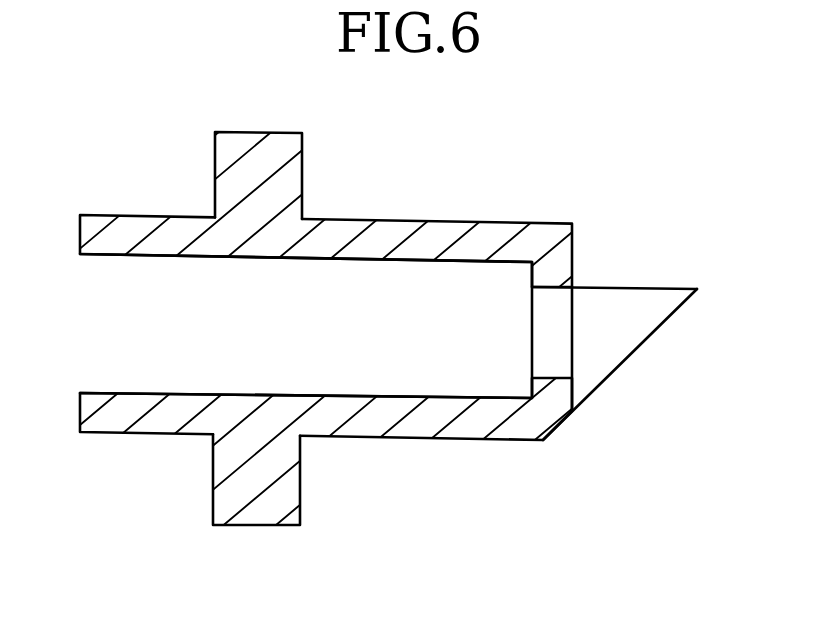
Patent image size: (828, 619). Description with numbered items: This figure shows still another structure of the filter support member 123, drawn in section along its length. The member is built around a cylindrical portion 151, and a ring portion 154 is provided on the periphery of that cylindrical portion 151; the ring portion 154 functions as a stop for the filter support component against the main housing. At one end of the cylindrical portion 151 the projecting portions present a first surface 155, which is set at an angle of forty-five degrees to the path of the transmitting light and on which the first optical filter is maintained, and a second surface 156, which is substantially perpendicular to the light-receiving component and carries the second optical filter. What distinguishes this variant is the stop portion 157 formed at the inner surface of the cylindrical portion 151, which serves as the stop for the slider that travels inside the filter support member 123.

The filter support member 123 is at (590, 143).
The cylindrical portion 151 is at (138, 216).
The ring portion 154 is at (303, 155).
The first surface 155 is at (615, 369).
The second surface 156 is at (625, 287).
The stop portion 157 is at (532, 278).